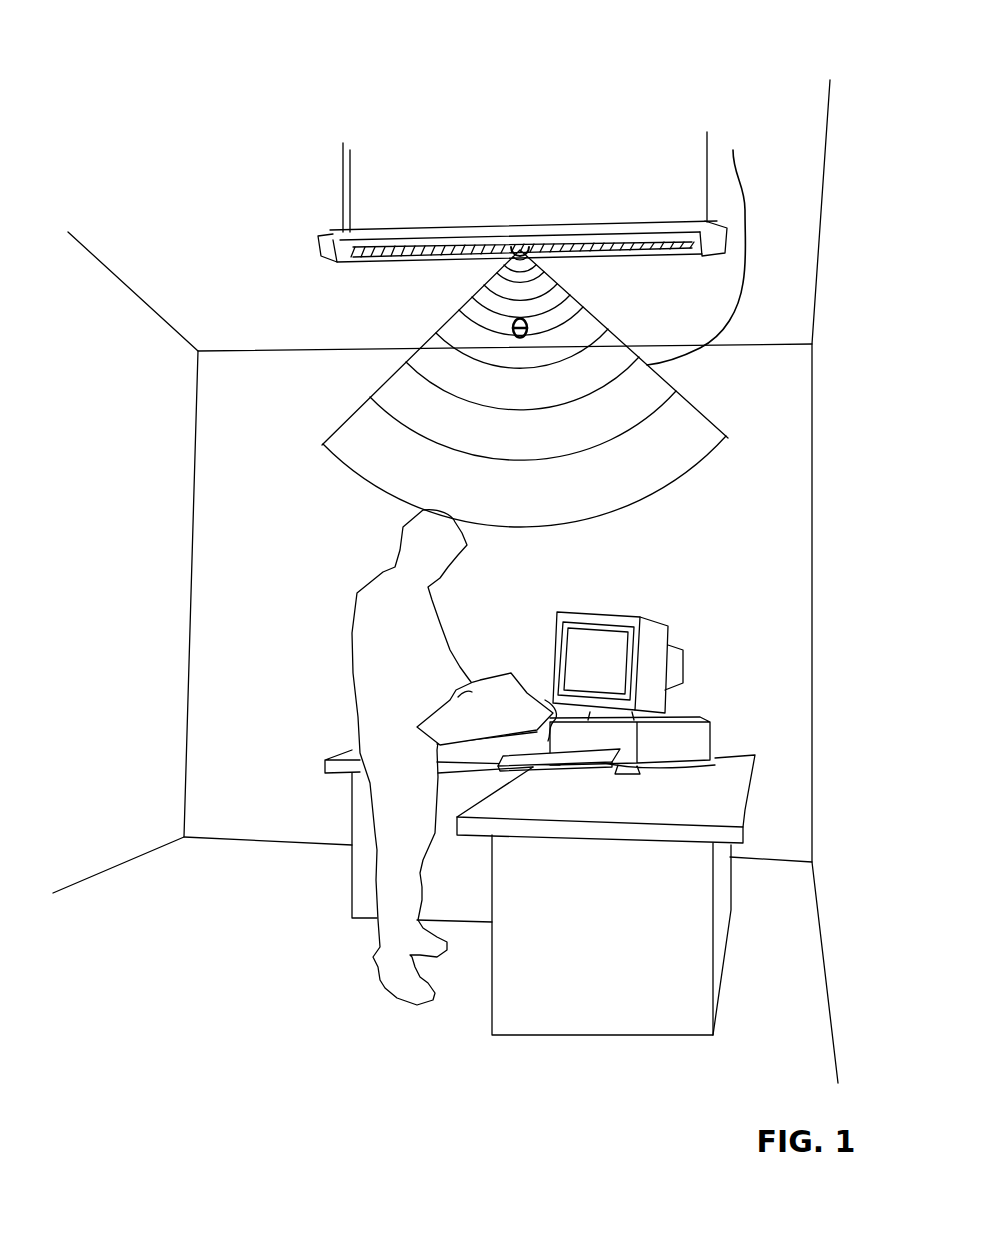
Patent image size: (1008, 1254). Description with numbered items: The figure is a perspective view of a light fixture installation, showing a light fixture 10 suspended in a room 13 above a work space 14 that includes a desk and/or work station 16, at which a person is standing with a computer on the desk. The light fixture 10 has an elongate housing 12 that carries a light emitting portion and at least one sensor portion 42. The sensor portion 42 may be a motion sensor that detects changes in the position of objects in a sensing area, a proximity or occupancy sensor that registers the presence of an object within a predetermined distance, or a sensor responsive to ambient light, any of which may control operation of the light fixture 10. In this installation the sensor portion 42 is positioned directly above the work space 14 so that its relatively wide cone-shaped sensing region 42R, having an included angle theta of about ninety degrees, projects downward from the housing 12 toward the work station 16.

The light fixture 10 is at (628, 124).
The elongate housing 12 is at (428, 240).
The room 13 is at (196, 965).
The work space 14 is at (728, 553).
The desk and/or work station 16 is at (784, 739).
The sensor portion 42 is at (520, 246).
The cone-shaped sensing region 42R is at (733, 150).